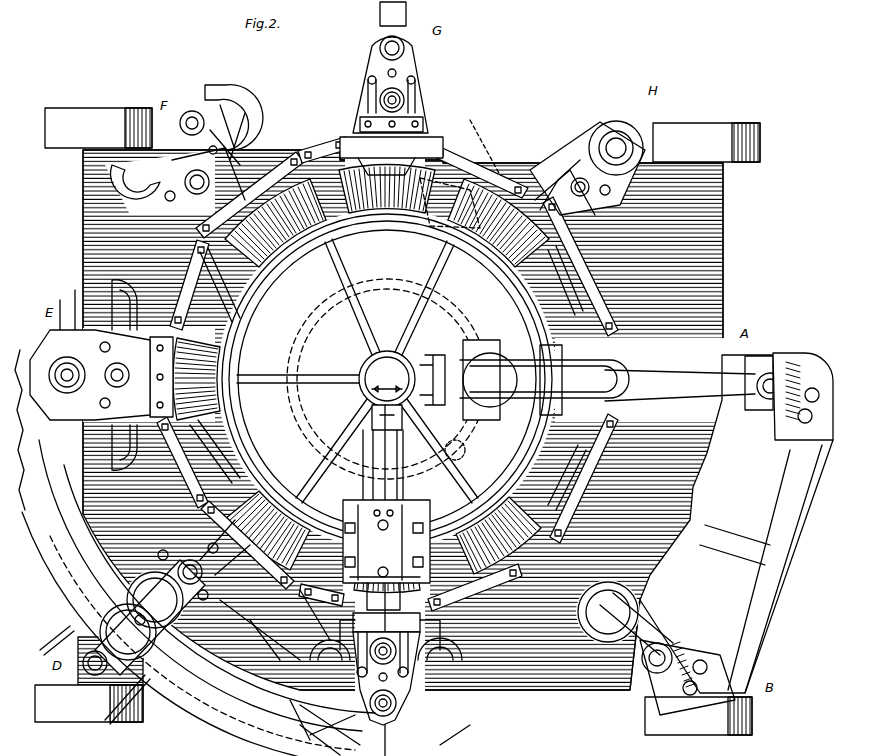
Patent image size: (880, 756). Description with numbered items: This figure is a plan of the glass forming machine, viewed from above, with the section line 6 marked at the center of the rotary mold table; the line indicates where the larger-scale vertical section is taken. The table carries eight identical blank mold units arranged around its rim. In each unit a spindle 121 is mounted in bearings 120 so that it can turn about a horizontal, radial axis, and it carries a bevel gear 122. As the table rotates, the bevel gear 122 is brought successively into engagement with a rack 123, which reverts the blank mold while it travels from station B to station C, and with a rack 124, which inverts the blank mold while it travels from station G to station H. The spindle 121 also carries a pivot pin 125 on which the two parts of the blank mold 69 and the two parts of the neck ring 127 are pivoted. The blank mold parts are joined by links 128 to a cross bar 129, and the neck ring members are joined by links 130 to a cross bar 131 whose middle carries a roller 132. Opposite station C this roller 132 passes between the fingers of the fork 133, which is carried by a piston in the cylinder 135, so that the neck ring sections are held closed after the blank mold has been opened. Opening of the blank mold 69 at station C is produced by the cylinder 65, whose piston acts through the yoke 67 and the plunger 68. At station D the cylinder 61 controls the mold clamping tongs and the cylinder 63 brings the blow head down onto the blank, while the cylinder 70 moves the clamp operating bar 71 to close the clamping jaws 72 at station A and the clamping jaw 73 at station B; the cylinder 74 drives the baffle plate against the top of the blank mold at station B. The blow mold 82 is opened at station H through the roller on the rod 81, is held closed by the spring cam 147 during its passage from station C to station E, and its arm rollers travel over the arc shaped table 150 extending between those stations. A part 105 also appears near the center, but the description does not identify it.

The section line 6— 6 is at (387, 379).
The cylinder 61 is at (119, 664).
The cylinder 63 is at (172, 597).
The cylinder 65 is at (389, 580).
The yoke 67 is at (404, 418).
The plunger 68 is at (335, 409).
The blank mold 69 is at (466, 455).
The cylinder 70 is at (735, 500).
The clamp operating bar 71 is at (810, 505).
The clamping jaws 72 is at (790, 360).
The clamping jaw 73 is at (715, 650).
The cylinder 74 is at (625, 618).
The rod 81 is at (498, 730).
The blow mold 82 is at (50, 350).
The shaft 105 is at (510, 400).
The bearings 120 is at (269, 222).
The spindle 121 is at (258, 175).
The bevel gear 122 is at (295, 160).
The rack 123 is at (475, 620).
The rack 124 is at (484, 147).
The pivot pin 125 is at (232, 145).
The neck ring 127 is at (190, 105).
The links 128 is at (565, 160).
The cross bar 129 is at (540, 172).
The links 130 is at (366, 92).
The cross bar 131 is at (425, 117).
The roller 132 is at (365, 118).
The fork 133 is at (330, 665).
The cylinder 135 is at (425, 645).
The spring cam 147 is at (65, 565).
The arc shaped table 150 is at (265, 700).